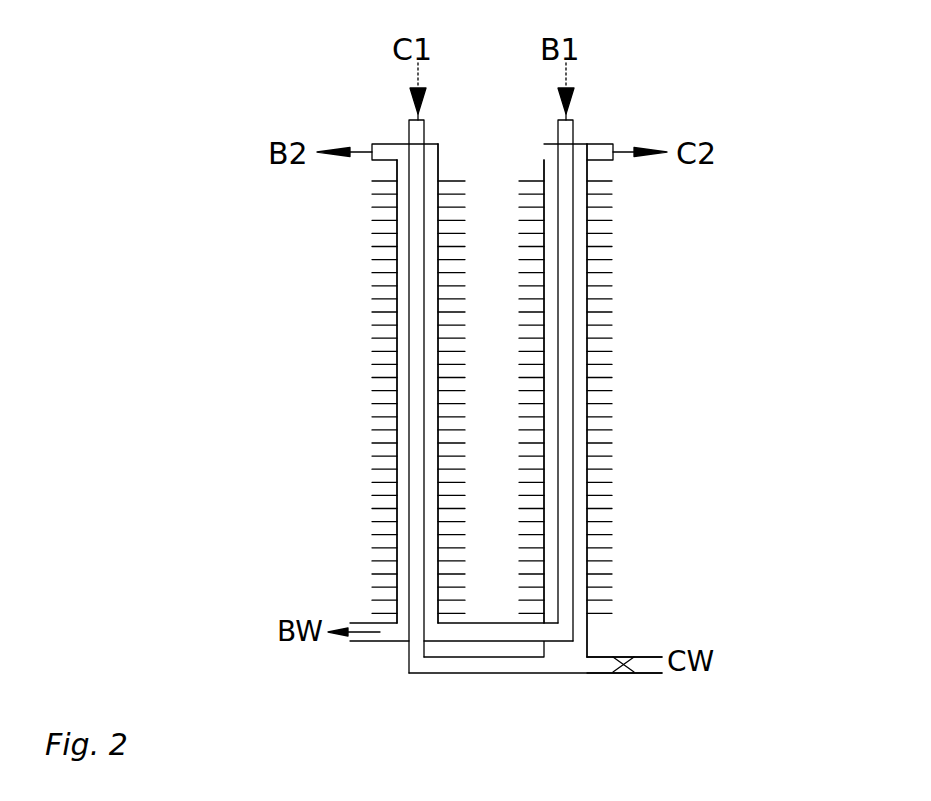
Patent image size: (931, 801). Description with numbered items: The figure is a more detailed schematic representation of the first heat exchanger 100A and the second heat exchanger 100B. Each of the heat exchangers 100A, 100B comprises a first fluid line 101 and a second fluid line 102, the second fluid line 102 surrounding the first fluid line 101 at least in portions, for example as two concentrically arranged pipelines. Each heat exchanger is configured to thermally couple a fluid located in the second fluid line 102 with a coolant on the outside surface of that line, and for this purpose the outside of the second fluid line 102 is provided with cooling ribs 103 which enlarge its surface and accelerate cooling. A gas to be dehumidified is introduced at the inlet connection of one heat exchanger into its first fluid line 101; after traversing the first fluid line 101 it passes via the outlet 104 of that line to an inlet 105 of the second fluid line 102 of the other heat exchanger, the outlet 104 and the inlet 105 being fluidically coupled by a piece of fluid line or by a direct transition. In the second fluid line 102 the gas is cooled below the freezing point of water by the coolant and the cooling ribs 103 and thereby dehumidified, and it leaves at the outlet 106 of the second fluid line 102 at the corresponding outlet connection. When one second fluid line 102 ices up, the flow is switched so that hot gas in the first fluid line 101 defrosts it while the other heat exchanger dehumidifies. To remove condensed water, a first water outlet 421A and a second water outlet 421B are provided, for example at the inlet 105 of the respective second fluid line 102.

The first heat exchanger 100A is at (300, 353).
The second heat exchanger 100B is at (688, 206).
The first fluid line 101 is at (410, 205).
The second fluid line 102 is at (397, 262).
The cooling ribs 103 is at (372, 465).
The outlet of the first fluid line 104 is at (418, 653).
The inlet of the second fluid line 105 is at (397, 620).
The outlet of the second fluid line 106 is at (385, 144).
The first water outlet 421A is at (397, 623).
The second water outlet 421B is at (623, 672).